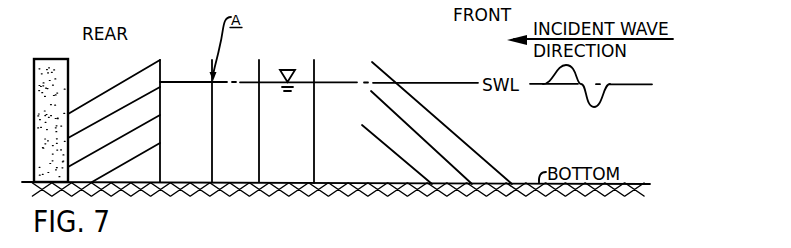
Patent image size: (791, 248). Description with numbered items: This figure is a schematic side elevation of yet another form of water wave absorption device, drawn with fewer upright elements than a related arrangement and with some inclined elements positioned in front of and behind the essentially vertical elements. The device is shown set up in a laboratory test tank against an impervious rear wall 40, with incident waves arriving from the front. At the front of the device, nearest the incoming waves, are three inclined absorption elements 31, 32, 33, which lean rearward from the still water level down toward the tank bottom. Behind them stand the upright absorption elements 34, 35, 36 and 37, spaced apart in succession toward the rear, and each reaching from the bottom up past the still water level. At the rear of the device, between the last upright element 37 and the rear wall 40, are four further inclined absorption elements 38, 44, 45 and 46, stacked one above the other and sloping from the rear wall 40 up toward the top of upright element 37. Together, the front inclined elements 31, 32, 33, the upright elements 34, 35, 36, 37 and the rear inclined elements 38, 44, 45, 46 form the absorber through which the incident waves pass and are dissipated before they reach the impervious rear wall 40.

The absorption element 31 is at (442, 115).
The absorption element 32 is at (421, 135).
The absorption element 33 is at (397, 150).
The absorption element 34 is at (309, 111).
The absorption element 35 is at (254, 110).
The absorption element 36 is at (208, 110).
The absorption element 37 is at (154, 110).
The absorption element 38 is at (114, 86).
The rear wall 40 is at (36, 59).
The absorption element 44 is at (114, 112).
The absorption element 45 is at (114, 141).
The absorption element 46 is at (126, 162).